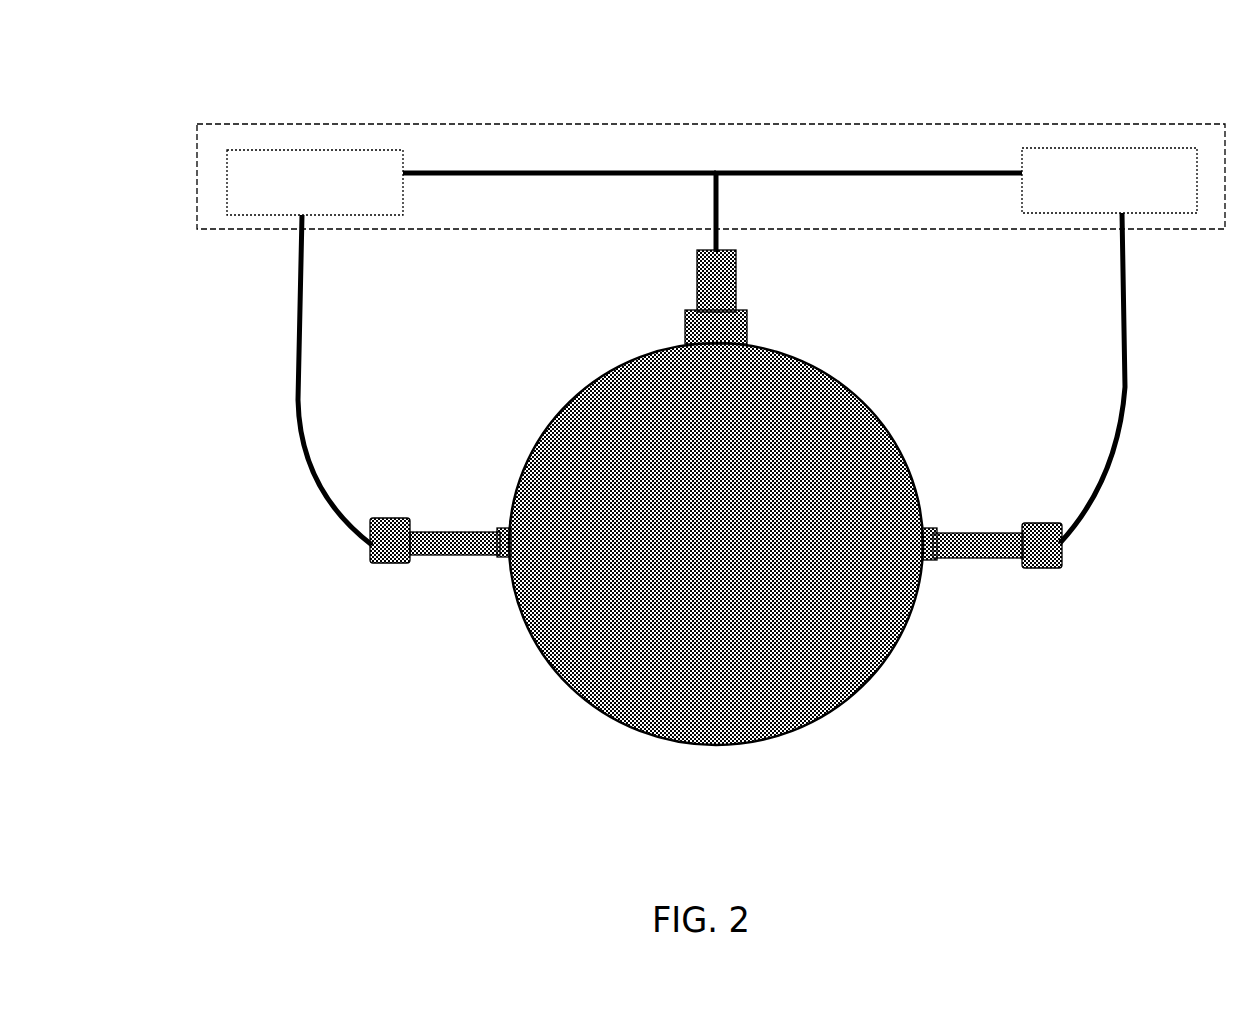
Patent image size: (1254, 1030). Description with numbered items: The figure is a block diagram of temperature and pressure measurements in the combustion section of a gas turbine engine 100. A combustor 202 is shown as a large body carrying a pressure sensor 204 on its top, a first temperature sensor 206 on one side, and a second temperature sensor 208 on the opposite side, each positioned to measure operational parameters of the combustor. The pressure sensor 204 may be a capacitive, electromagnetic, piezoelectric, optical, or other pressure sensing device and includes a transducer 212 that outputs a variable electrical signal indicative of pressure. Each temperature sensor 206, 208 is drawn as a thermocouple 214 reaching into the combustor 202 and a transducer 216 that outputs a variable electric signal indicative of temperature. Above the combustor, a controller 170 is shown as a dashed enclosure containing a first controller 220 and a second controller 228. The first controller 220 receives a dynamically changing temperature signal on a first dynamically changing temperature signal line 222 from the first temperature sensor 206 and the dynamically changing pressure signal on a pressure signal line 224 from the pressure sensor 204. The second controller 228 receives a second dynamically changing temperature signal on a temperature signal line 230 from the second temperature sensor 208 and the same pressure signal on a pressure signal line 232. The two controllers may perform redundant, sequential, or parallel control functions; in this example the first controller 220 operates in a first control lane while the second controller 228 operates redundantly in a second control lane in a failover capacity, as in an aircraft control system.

The gas turbine engine 100 is at (581, 51).
The controller 170 is at (197, 177).
The second controller 228 is at (315, 150).
The first controller 220 is at (1130, 148).
The pressure signal line 232 is at (570, 170).
The pressure signal line 224 is at (795, 170).
The transducer 212 is at (697, 295).
The pressure sensor 204 is at (750, 324).
The combustor 202 is at (808, 749).
The temperature signal line 230 is at (292, 370).
The first dynamically changing temperature signal line 222 is at (1133, 383).
The second temperature sensor 208 is at (396, 570).
The first temperature sensor 206 is at (1032, 574).
The transducer 216 is at (385, 518).
The thermocouple 214 is at (500, 530).